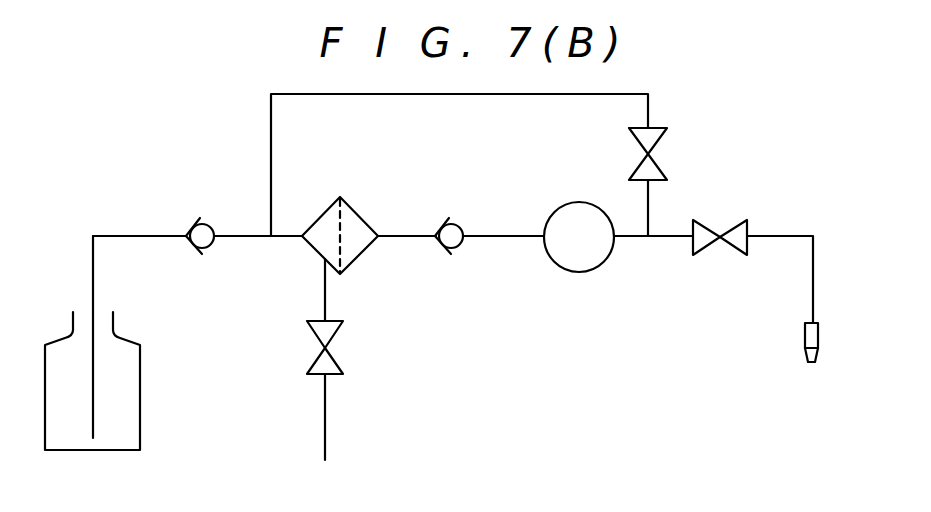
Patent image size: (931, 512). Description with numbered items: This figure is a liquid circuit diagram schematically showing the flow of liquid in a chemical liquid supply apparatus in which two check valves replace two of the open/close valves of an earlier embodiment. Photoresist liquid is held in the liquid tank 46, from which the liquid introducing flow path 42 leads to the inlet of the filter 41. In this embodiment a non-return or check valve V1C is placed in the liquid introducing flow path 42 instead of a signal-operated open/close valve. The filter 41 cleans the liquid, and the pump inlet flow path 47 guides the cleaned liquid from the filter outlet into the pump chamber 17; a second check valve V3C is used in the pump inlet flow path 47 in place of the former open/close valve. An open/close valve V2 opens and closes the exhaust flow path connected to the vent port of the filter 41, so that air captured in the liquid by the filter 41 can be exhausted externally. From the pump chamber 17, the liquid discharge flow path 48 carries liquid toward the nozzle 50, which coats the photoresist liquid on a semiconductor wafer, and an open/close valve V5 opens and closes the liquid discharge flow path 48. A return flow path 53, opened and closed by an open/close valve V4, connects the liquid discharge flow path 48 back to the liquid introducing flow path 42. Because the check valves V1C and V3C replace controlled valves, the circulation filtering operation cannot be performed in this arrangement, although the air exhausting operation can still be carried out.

The liquid tank 46 is at (141, 400).
The check valve V1C is at (212, 248).
The liquid introducing flow path 42 is at (246, 236).
The return flow path 53 is at (502, 95).
The filter 41 is at (358, 220).
The open/close valve V2 is at (333, 333).
The check valve V3C is at (455, 247).
The pump inlet flow path 47 is at (507, 236).
The pump chamber 17 is at (593, 258).
The open/close valve V4 is at (660, 145).
The liquid discharge flow path 48 is at (673, 237).
The open/close valve V5 is at (733, 248).
The nozzle 50 is at (805, 340).